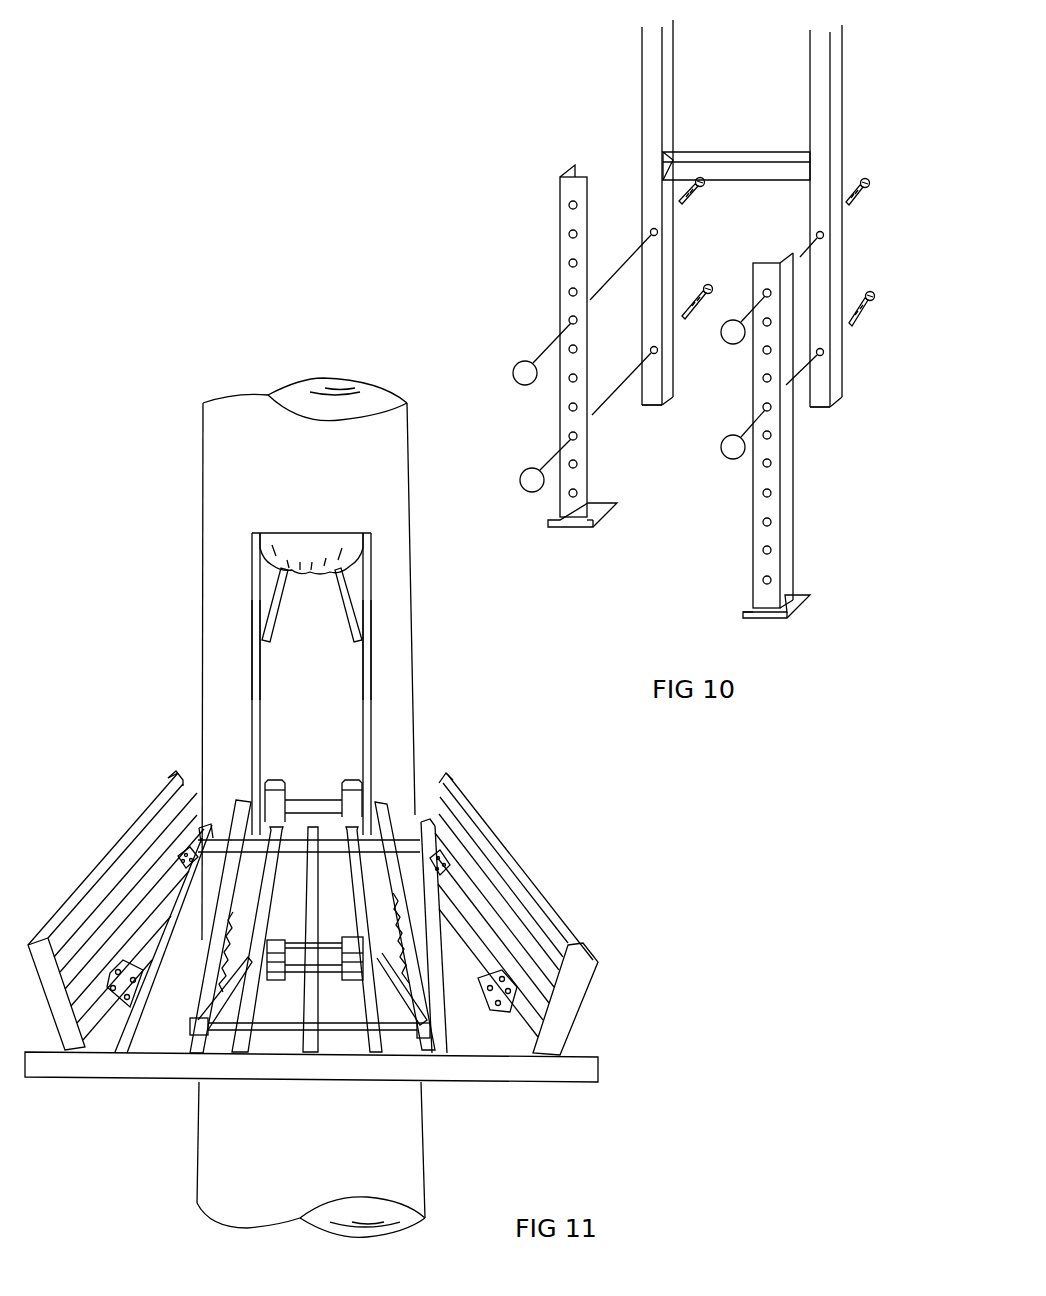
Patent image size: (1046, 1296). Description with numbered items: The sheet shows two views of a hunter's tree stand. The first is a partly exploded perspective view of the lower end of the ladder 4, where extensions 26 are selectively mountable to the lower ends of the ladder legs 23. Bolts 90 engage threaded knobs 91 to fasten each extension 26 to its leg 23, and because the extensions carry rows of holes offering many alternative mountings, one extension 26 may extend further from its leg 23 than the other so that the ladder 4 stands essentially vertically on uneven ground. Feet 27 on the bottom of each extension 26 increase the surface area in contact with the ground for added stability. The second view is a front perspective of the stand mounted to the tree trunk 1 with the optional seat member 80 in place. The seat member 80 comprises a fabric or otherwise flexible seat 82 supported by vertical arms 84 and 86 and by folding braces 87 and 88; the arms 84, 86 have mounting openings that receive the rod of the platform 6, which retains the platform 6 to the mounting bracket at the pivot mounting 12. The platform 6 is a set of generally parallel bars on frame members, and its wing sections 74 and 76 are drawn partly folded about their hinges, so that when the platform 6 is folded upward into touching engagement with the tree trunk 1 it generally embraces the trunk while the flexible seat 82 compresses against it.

In FIG. 10, the ladder 4 is at (642, 70).
In FIG. 10, the bolts 90 is at (869, 178).
In FIG. 10, the extensions 26 is at (560, 232).
In FIG. 10, the threaded knobs 91 is at (515, 362).
In FIG. 10, the ladder legs 23 is at (657, 402).
In FIG. 10, the feet 27 is at (794, 607).
In FIG. 11, the tree trunk 1 is at (408, 1141).
In FIG. 11, the seat member 80 is at (382, 565).
In FIG. 11, the seat 82 is at (283, 533).
In FIG. 11, the vertical arm 84 is at (258, 630).
In FIG. 11, the vertical arm 86 is at (375, 683).
In FIG. 11, the folding brace 87 is at (280, 598).
In FIG. 11, the folding brace 88 is at (352, 605).
In FIG. 11, the pivot mounting 12 is at (388, 812).
In FIG. 11, the wing section 76 is at (100, 858).
In FIG. 11, the wing section 74 is at (527, 868).
In FIG. 11, the platform 6 is at (605, 1003).